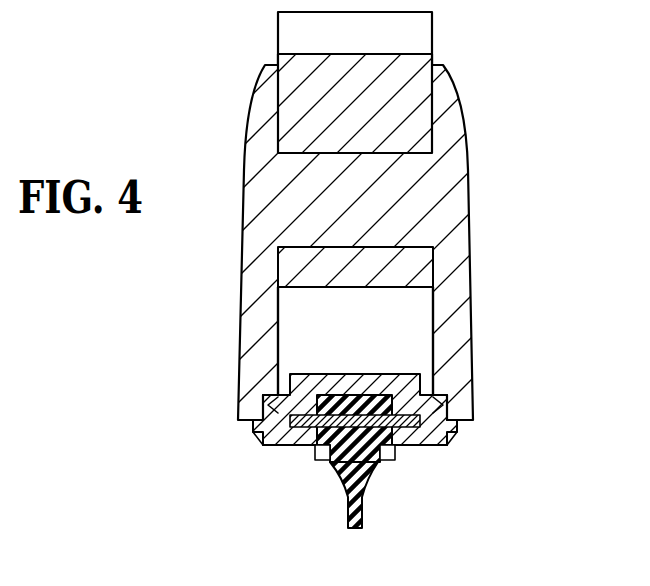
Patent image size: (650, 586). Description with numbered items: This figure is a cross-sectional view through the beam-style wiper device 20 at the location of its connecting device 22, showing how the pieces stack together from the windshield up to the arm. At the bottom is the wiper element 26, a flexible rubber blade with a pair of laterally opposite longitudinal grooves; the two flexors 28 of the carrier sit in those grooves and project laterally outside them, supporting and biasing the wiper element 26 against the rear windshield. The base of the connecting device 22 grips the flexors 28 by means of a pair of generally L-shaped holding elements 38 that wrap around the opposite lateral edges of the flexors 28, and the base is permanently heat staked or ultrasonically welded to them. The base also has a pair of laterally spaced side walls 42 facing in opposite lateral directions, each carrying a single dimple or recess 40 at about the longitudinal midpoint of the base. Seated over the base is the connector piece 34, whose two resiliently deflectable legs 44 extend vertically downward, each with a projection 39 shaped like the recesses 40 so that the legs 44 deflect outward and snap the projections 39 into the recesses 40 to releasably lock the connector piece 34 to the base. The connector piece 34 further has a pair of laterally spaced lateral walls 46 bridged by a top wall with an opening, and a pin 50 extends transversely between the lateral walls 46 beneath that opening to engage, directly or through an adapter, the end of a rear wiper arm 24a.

The wiper device 20 is at (325, 293).
The connecting device 22 is at (325, 293).
The rear wiper arm 24a is at (410, 102).
The wiper element 26 is at (365, 490).
The flexors 28 is at (392, 448).
The connector piece 34 is at (447, 215).
The holding elements 38 is at (274, 448).
The projections 39 is at (275, 416).
The recesses 40 is at (245, 423).
The side walls 42 is at (283, 392).
The legs 44 is at (250, 433).
The lateral walls 46 is at (257, 277).
The pin 50 is at (302, 168).